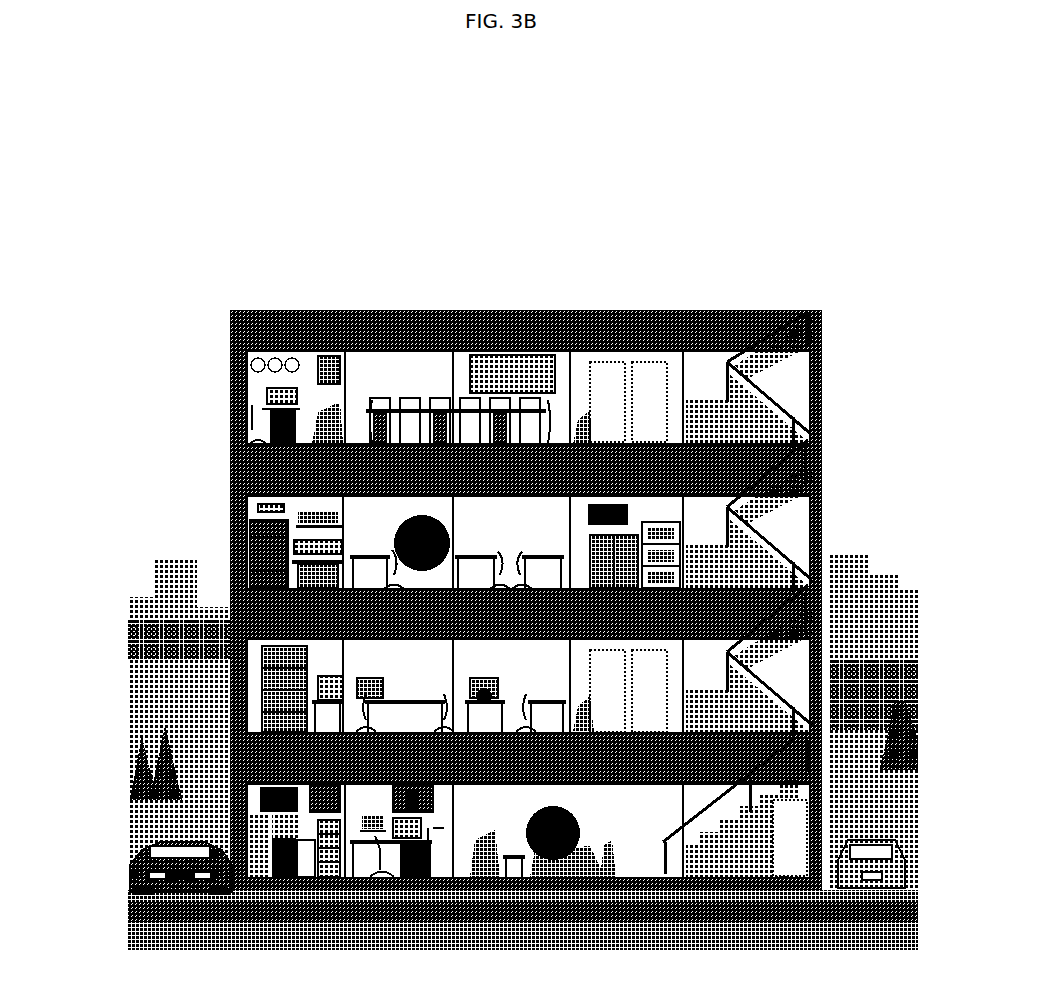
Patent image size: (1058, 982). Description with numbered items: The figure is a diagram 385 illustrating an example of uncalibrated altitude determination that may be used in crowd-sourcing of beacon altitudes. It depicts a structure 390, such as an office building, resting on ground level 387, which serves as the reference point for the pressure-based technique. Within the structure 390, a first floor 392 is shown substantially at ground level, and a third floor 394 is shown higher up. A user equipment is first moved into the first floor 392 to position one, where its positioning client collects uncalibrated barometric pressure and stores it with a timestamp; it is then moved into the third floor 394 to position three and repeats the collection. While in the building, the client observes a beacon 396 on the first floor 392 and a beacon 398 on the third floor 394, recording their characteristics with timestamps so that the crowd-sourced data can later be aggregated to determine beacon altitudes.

The diagram 385 is at (836, 152).
The ground level 387 is at (124, 891).
The structure 390 is at (822, 368).
The first floor 392 is at (521, 815).
The third floor 394 is at (526, 538).
The beacon 396 is at (300, 796).
The beacon 398 is at (630, 511).